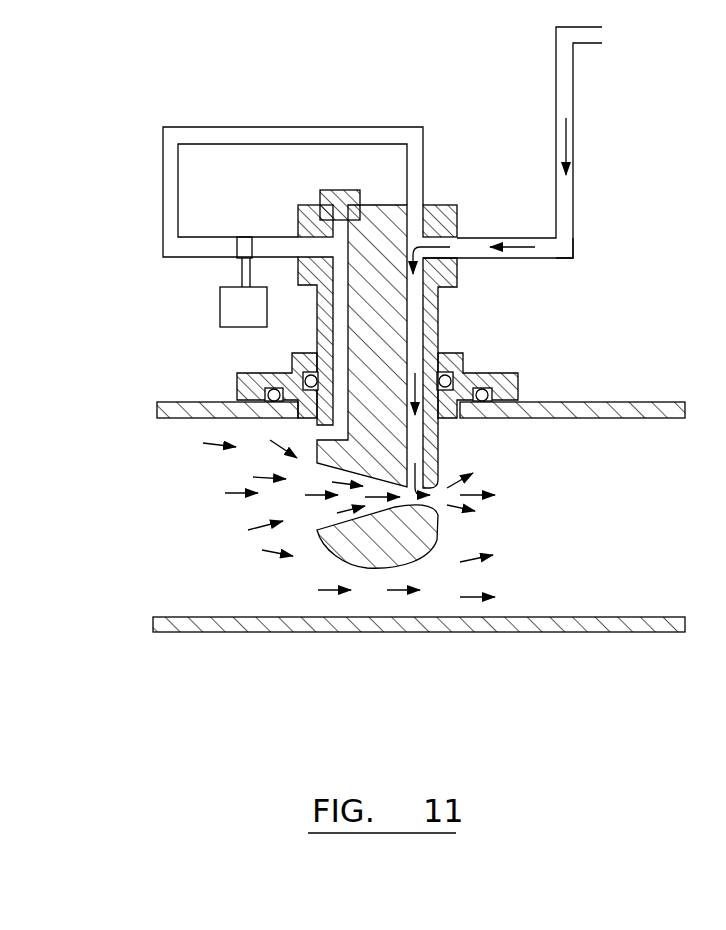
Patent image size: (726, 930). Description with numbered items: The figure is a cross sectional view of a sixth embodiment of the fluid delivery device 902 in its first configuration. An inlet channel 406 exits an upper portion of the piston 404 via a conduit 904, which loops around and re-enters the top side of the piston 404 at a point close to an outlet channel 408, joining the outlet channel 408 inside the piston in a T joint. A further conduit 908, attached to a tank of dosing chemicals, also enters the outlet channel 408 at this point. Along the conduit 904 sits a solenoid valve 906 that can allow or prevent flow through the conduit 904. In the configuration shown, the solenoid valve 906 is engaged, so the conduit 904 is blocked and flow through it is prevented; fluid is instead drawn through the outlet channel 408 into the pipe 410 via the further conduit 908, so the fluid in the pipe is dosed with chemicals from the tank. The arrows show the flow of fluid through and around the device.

The conduit 904 is at (238, 138).
The fluid delivery device 902 is at (604, 242).
The further conduit 908 is at (563, 253).
The solenoid valve 906 is at (240, 247).
The inlet channel 406 is at (340, 320).
The outlet channel 408 is at (415, 363).
The pipe 410 is at (195, 545).
The piston 404 is at (383, 552).